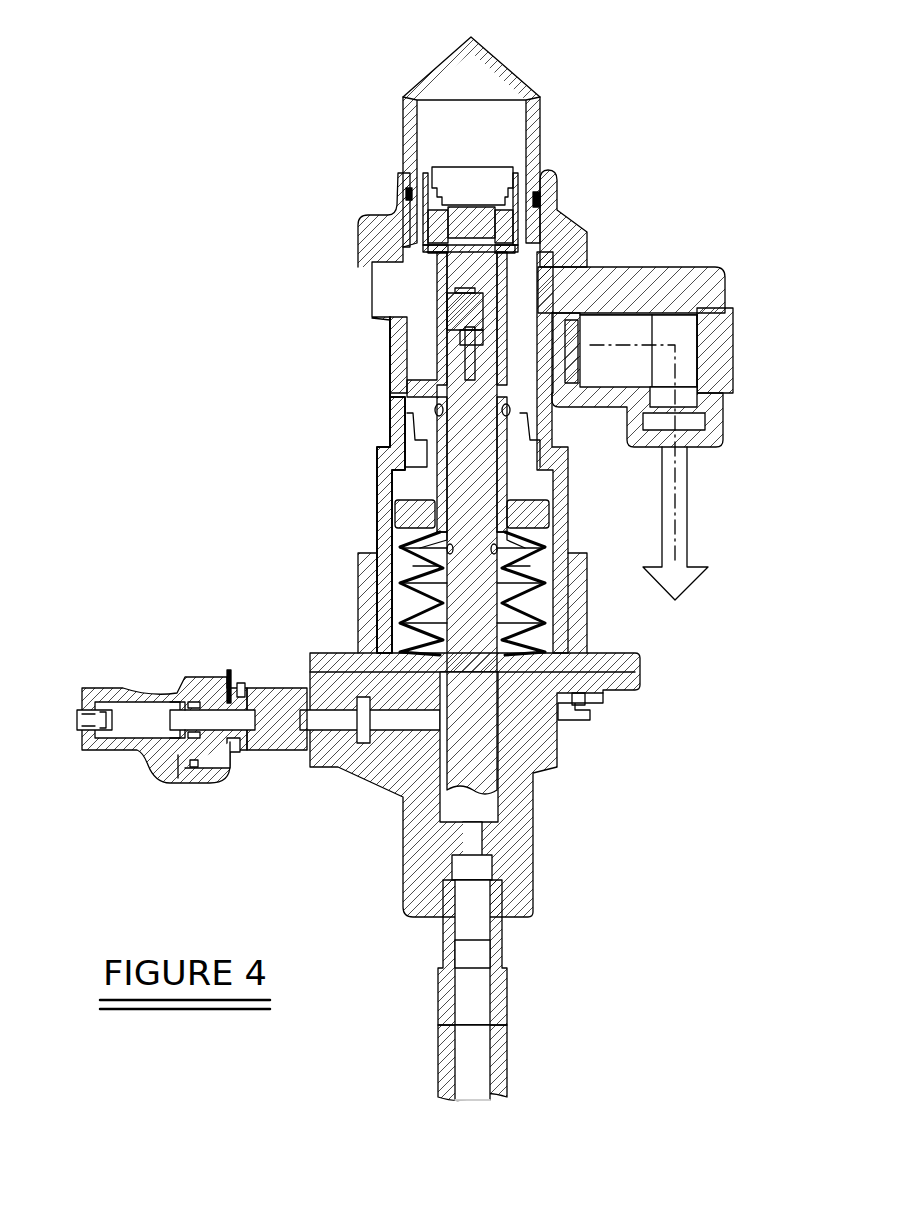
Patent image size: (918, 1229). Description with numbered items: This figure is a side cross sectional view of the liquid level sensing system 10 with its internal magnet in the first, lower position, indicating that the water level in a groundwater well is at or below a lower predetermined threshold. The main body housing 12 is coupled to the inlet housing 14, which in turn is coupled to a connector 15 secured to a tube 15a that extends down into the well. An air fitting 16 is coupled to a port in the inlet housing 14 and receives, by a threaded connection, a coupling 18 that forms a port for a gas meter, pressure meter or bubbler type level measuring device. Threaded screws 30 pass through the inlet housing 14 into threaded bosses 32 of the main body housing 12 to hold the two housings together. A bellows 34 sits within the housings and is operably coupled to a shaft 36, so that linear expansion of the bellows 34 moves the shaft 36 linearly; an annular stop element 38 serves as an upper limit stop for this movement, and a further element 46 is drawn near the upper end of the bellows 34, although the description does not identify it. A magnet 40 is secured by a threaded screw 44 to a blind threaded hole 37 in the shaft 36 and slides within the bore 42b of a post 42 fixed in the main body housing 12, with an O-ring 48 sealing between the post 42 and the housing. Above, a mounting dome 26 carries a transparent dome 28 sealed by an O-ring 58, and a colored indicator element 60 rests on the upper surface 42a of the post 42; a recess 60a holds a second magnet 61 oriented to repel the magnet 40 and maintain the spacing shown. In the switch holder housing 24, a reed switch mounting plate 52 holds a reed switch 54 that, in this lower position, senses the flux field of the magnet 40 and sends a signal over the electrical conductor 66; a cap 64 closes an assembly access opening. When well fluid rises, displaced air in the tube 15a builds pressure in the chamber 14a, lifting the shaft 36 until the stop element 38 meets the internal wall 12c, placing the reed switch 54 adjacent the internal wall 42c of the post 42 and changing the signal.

The liquid level sensing system 10 is at (296, 66).
The main body housing 12 is at (375, 446).
The internal wall 12c is at (432, 473).
The inlet housing 14 is at (392, 792).
The chamber 14a is at (487, 806).
The connector 15 is at (502, 987).
The tube 15a is at (455, 1048).
The air fitting 16 is at (275, 698).
The coupling 18 is at (120, 695).
The switch holder housing 24 is at (700, 268).
The mounting dome 26 is at (370, 232).
The transparent dome 28 is at (510, 70).
The threaded screws 30 is at (578, 705).
The threaded bosses 32 is at (577, 608).
The bellows 34 is at (415, 607).
The shaft 36 is at (467, 580).
The blind threaded hole 37 is at (472, 332).
The annular stop element 38 is at (410, 513).
The magnet 40 is at (455, 305).
The post 42 is at (440, 282).
The upper surface 42a is at (455, 235).
The bore 42b is at (440, 255).
The internal wall 42c is at (498, 235).
The threaded screw 44 is at (470, 355).
The washer 46 is at (425, 547).
The O-ring 48 is at (435, 410).
The reed switch mounting plate 52 is at (595, 318).
The reed switch 54 is at (565, 312).
The O-ring 58 is at (406, 192).
The colored indicator element 60 is at (445, 218).
The recess 60a is at (452, 238).
The magnet 61 is at (535, 195).
The cap 64 is at (733, 355).
The electrical conductor 66 is at (700, 345).